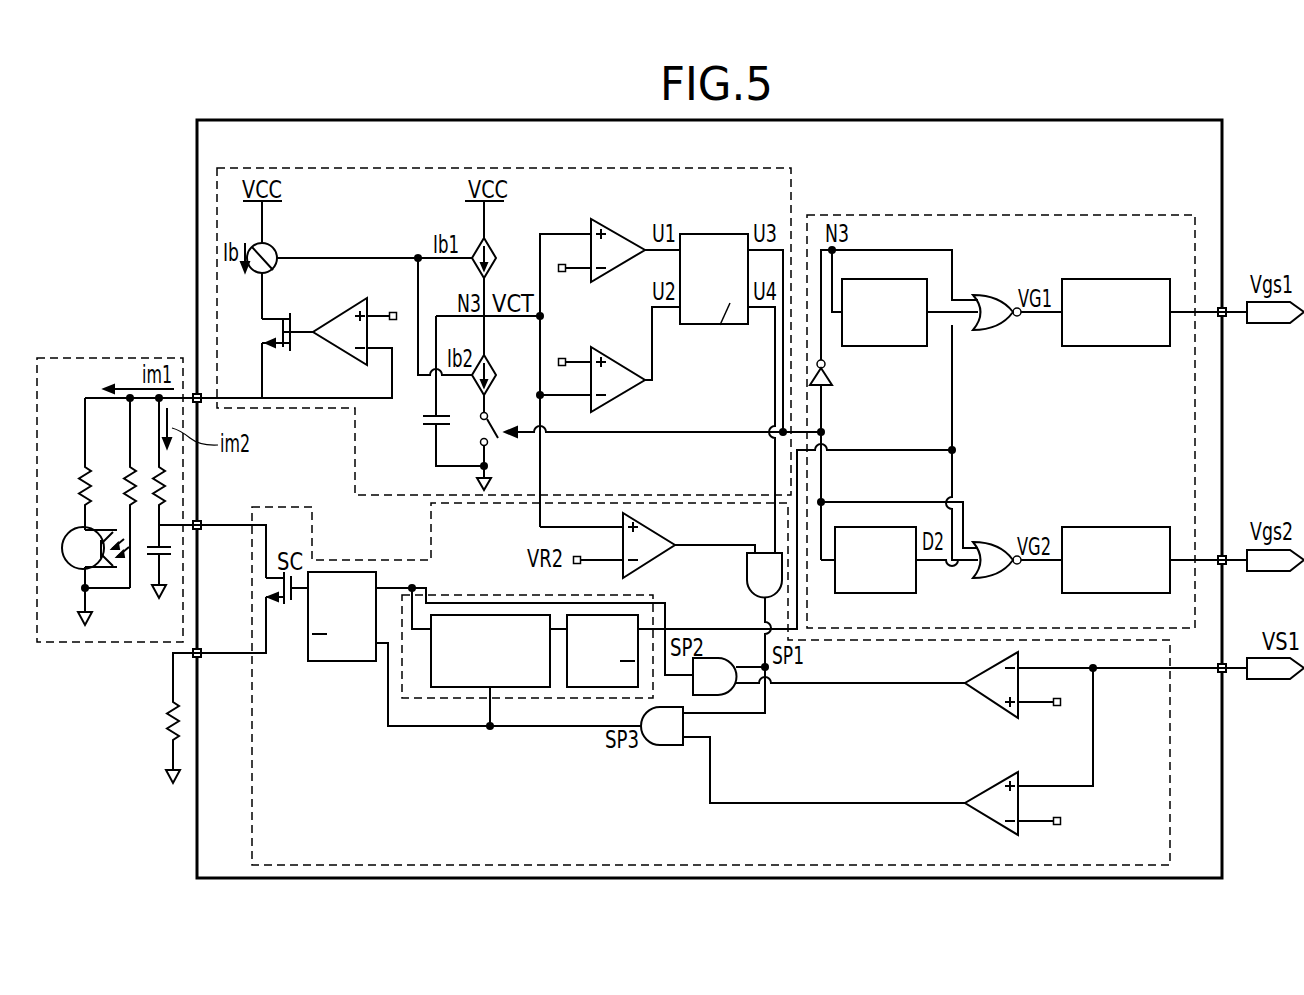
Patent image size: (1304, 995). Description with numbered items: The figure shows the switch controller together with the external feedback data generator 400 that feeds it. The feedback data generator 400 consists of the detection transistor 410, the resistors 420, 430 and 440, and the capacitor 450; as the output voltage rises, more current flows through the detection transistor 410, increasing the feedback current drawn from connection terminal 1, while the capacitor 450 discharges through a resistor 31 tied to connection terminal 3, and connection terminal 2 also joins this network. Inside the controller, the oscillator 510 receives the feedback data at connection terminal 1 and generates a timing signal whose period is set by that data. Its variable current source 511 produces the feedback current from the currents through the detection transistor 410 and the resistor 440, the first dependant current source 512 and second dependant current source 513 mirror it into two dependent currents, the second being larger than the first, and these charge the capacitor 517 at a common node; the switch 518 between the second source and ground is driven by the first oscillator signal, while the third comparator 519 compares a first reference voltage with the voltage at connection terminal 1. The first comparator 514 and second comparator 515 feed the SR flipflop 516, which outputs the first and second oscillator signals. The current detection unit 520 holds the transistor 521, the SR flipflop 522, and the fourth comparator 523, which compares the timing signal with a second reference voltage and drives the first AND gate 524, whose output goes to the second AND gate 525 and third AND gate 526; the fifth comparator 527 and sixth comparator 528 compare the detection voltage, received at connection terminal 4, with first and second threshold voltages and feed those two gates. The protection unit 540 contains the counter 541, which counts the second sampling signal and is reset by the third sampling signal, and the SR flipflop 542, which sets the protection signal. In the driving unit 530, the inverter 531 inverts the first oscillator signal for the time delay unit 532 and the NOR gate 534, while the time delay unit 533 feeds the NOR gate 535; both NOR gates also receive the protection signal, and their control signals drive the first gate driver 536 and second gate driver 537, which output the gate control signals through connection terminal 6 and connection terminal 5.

The feedback data generator 400 is at (133, 357).
The detection transistor 410 is at (78, 568).
The resistor 420 is at (82, 467).
The resistor 430 is at (125, 478).
The resistor 440 is at (165, 477).
The capacitor 450 is at (165, 558).
The resistor 31 is at (171, 718).
The oscillator 510 is at (740, 167).
The variable current source 511 is at (275, 250).
The first dependant current source 512 is at (491, 250).
The second dependant current source 513 is at (492, 362).
The first comparator 514 is at (620, 222).
The second comparator 515 is at (616, 348).
The SR flipflop 516 is at (719, 326).
The capacitor 517 is at (421, 422).
The switch 518 is at (497, 438).
The third comparator 519 is at (340, 312).
The current detection unit 520 is at (298, 506).
The transistor 521 is at (292, 632).
The SR flipflop 522 is at (340, 663).
The fourth comparator 523 is at (664, 534).
The first AND gate 524 is at (746, 570).
The second AND gate 525 is at (725, 697).
The third AND gate 526 is at (674, 746).
The fifth comparator 527 is at (988, 700).
The sixth comparator 528 is at (988, 808).
The driving unit 530 is at (1070, 214).
The inverter 531 is at (833, 378).
The time delay unit 532 is at (905, 347).
The time delay unit 533 is at (918, 585).
The NOR gate 534 is at (990, 332).
The NOR gate 535 is at (990, 540).
The first gate driver 536 is at (1130, 347).
The second gate driver 537 is at (1130, 526).
The protection unit 540 is at (462, 699).
The counter 541 is at (523, 689).
The SR flipflop 542 is at (603, 689).
The connection terminal 1 is at (203, 384).
The connection terminal 2 is at (204, 514).
The connection terminal 3 is at (204, 641).
The connection terminal 4 is at (1228, 683).
The connection terminal 5 is at (1228, 577).
The connection terminal 6 is at (1228, 327).